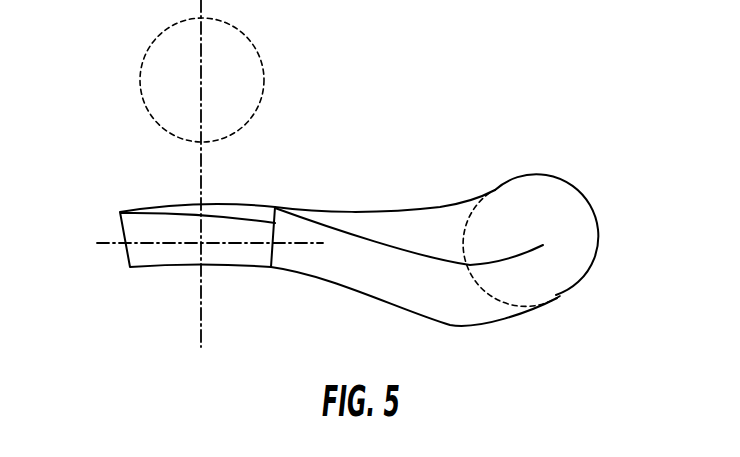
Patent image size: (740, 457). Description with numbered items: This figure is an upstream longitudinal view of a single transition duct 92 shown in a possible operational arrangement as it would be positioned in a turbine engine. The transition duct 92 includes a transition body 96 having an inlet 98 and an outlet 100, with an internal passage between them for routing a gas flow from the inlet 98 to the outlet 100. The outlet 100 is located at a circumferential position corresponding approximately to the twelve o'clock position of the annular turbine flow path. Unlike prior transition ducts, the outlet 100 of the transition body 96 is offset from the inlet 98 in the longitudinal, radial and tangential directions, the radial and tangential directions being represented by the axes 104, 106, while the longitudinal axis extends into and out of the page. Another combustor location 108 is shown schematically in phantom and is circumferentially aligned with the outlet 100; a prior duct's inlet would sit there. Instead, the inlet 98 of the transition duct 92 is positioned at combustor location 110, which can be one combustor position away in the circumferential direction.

The transition duct 92 is at (311, 138).
The transition body 96 is at (358, 212).
The inlet 98 is at (553, 262).
The outlet 100 is at (167, 275).
The radial axis 104 is at (202, 302).
The tangential axis 106 is at (107, 242).
The combustor location 108 is at (168, 94).
The combustor location 110 is at (525, 216).